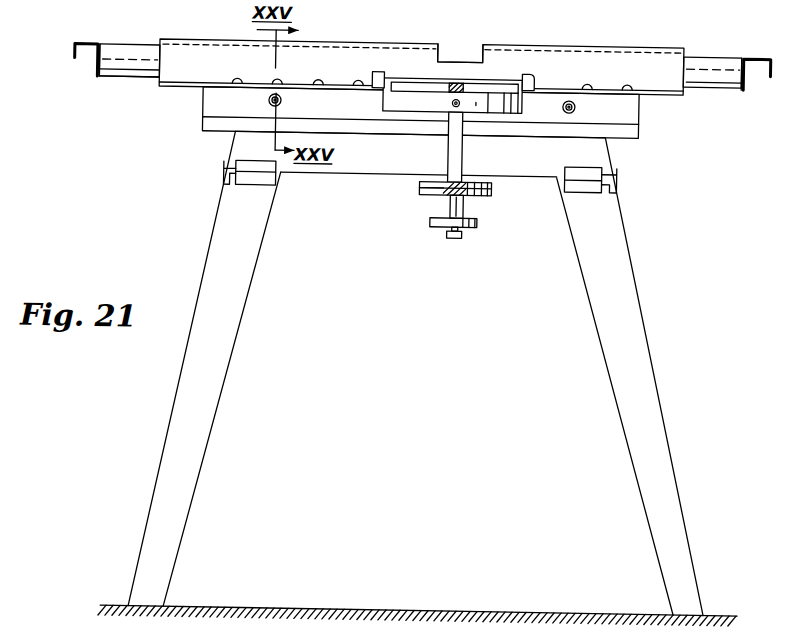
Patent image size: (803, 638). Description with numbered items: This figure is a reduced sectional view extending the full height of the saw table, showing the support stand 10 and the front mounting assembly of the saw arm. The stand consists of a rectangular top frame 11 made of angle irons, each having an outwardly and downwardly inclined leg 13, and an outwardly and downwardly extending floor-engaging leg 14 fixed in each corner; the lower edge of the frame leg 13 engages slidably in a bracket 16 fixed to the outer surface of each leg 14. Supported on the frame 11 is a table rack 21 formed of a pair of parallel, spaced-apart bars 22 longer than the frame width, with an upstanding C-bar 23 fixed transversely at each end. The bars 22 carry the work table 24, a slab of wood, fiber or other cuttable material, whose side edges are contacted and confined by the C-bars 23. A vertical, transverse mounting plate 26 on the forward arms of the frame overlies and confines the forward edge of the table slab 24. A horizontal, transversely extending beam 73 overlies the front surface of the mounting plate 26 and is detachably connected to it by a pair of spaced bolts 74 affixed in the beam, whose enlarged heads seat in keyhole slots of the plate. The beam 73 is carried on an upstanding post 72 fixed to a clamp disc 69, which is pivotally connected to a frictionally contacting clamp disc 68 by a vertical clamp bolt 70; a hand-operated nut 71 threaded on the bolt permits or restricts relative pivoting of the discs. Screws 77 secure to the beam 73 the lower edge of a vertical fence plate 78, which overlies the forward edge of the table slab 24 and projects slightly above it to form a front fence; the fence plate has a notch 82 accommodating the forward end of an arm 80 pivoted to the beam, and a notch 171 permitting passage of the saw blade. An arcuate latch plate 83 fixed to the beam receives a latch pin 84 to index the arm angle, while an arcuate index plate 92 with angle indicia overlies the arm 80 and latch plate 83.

The support stand 10 is at (421, 377).
The rectangular top frame 11 is at (333, 172).
The inclined leg of frame angle-iron 13 is at (373, 169).
The floor-engaging leg 14 is at (211, 456).
The bracket 16 is at (226, 176).
The table rack 21 is at (114, 79).
The bars 22 is at (143, 78).
The C-bar 23 is at (85, 43).
The work table 24 is at (138, 45).
The mounting plate 26 is at (204, 130).
The clamp disc 68 is at (480, 190).
The clamp disc 69 is at (423, 177).
The clamp bolt 70 is at (461, 229).
The hand-operated nut 71 is at (438, 218).
The upstanding post 72 is at (464, 153).
The beam 73 is at (206, 105).
The bolts 74 is at (270, 99).
The screws 77 is at (629, 77).
The fence plate 78 is at (584, 50).
The arm 80 is at (449, 78).
The notch 82 is at (523, 74).
The latch plate 83 is at (412, 99).
The latch pin 84 is at (455, 102).
The index plate 92 is at (501, 76).
The notch 171 is at (462, 56).